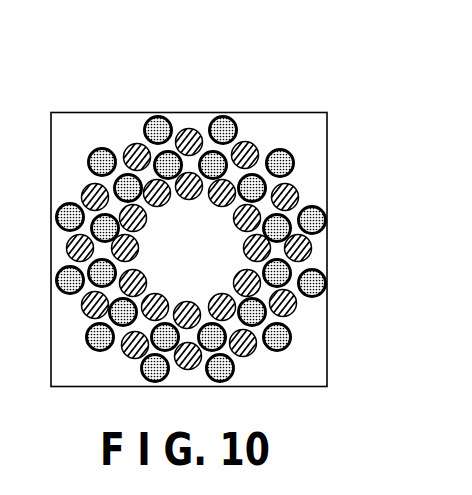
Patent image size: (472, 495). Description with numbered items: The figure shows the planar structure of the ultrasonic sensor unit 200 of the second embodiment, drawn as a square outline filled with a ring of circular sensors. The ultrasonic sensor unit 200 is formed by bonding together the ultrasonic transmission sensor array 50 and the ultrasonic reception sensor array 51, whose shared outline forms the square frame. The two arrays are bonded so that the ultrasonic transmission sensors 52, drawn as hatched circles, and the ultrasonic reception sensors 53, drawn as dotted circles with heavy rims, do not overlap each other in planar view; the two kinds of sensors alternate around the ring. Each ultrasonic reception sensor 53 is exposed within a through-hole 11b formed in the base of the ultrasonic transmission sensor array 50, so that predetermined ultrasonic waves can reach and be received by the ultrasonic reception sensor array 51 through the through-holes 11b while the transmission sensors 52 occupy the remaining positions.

The ultrasonic sensor unit 200 is at (222, 206).
The ultrasonic transmission sensor array 50 is at (189, 213).
The ultrasonic reception sensor array 51 is at (115, 111).
The ultrasonic transmission sensor 52 is at (246, 152).
The ultrasonic reception sensor 53 is at (316, 289).
The through-hole 11b is at (287, 347).